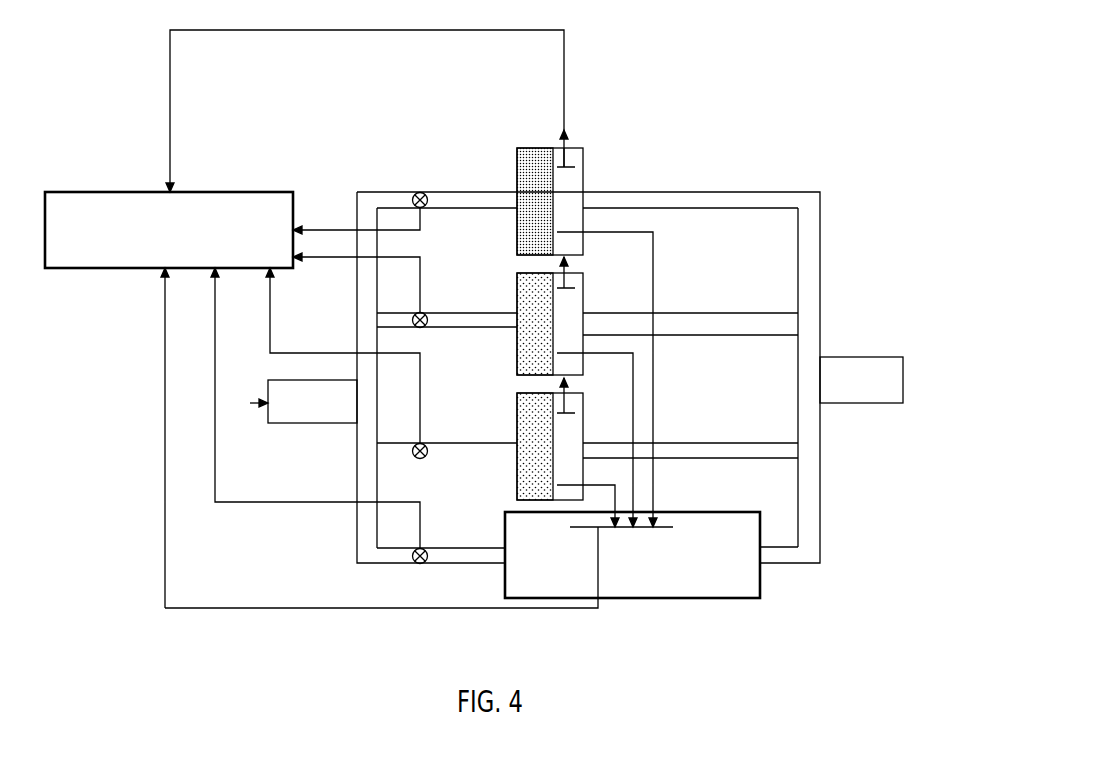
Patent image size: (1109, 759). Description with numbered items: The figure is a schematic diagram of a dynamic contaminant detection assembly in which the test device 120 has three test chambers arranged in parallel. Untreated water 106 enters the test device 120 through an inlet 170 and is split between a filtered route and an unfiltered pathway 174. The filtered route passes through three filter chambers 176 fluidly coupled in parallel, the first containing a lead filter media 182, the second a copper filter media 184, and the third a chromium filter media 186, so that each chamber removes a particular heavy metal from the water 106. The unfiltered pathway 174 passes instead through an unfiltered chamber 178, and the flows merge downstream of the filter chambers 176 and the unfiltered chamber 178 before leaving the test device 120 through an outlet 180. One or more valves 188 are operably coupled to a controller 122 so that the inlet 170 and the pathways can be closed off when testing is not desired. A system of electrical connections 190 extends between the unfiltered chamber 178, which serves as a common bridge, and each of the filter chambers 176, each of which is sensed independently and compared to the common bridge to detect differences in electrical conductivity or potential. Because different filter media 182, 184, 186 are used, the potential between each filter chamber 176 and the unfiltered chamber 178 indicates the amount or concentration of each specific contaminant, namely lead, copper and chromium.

The test device 120 is at (902, 111).
The controller 122 is at (173, 241).
The inlet 170 is at (295, 380).
The untreated water 106 is at (262, 403).
The unfiltered pathway 174 is at (397, 193).
The valves 188 is at (427, 206).
The lead filter media 182 is at (525, 163).
The copper filter media 184 is at (525, 283).
The chromium filter media 186 is at (525, 410).
The filter chambers 176 is at (592, 222).
The electrical connections 190 is at (655, 418).
The unfiltered chamber 178 is at (639, 572).
The outlet 180 is at (880, 357).